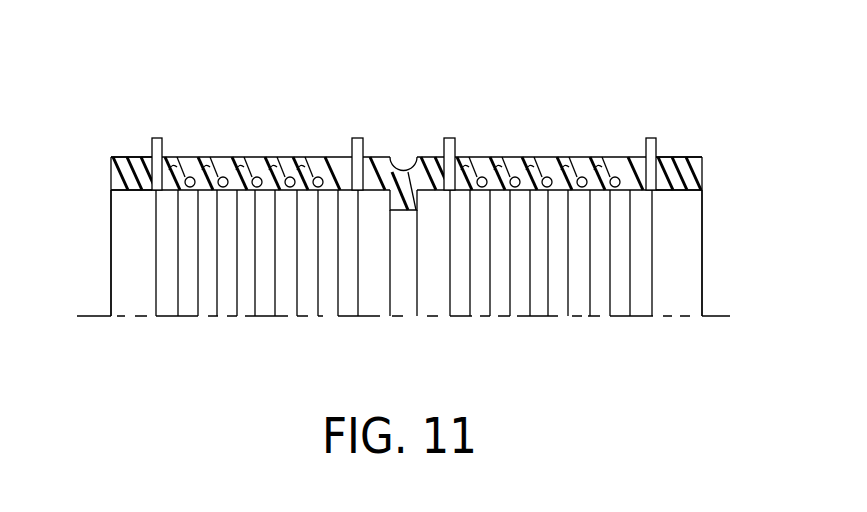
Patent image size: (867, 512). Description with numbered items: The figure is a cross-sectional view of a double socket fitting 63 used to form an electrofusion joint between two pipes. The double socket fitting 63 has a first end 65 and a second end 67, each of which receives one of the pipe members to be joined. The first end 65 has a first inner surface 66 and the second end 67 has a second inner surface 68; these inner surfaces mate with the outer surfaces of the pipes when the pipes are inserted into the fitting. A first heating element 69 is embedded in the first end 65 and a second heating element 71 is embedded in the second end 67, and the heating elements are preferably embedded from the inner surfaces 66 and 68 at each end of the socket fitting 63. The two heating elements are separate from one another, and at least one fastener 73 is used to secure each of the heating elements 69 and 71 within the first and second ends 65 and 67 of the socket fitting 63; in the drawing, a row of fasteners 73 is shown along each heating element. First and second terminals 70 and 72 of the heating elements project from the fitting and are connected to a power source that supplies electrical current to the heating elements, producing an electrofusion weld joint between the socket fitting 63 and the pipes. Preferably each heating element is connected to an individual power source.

The double socket fitting 63 is at (306, 153).
The first end 65 is at (128, 153).
The first inner surface 66 is at (132, 192).
The second end 67 is at (692, 155).
The second inner surface 68 is at (677, 192).
The first heating element 69 is at (213, 157).
The first terminal 70 is at (156, 138).
The second heating element 71 is at (500, 157).
The second terminal 72 is at (448, 138).
The fastener 73 is at (252, 157).